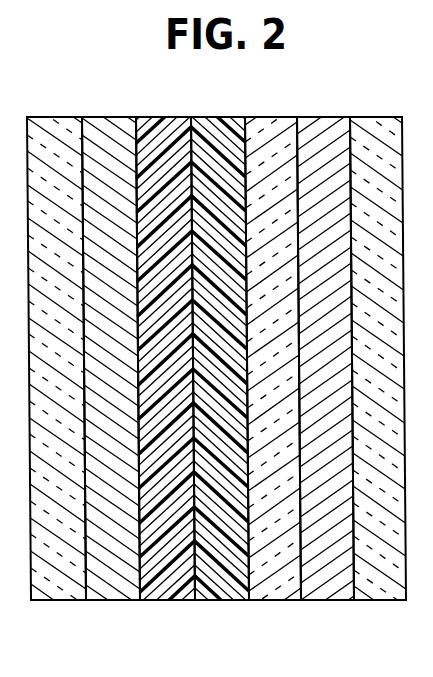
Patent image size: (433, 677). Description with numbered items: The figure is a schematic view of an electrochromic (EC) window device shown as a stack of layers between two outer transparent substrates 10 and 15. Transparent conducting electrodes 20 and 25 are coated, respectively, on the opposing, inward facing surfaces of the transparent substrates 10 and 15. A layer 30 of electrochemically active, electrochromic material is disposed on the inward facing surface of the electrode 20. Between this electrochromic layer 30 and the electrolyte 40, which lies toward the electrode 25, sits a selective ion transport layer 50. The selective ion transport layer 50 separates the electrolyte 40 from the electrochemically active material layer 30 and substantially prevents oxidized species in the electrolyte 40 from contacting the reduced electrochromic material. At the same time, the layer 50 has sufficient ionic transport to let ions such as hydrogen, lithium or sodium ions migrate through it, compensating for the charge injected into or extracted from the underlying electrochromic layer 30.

The transparent substrate 10 is at (58, 601).
The transparent substrate 15 is at (375, 601).
The transparent conducting electrode 20 is at (112, 117).
The transparent conducting electrode 25 is at (316, 117).
The layer of electrochemically active material 30 is at (165, 601).
The electrolyte 40 is at (273, 601).
The selective ion transport layer 50 is at (218, 117).